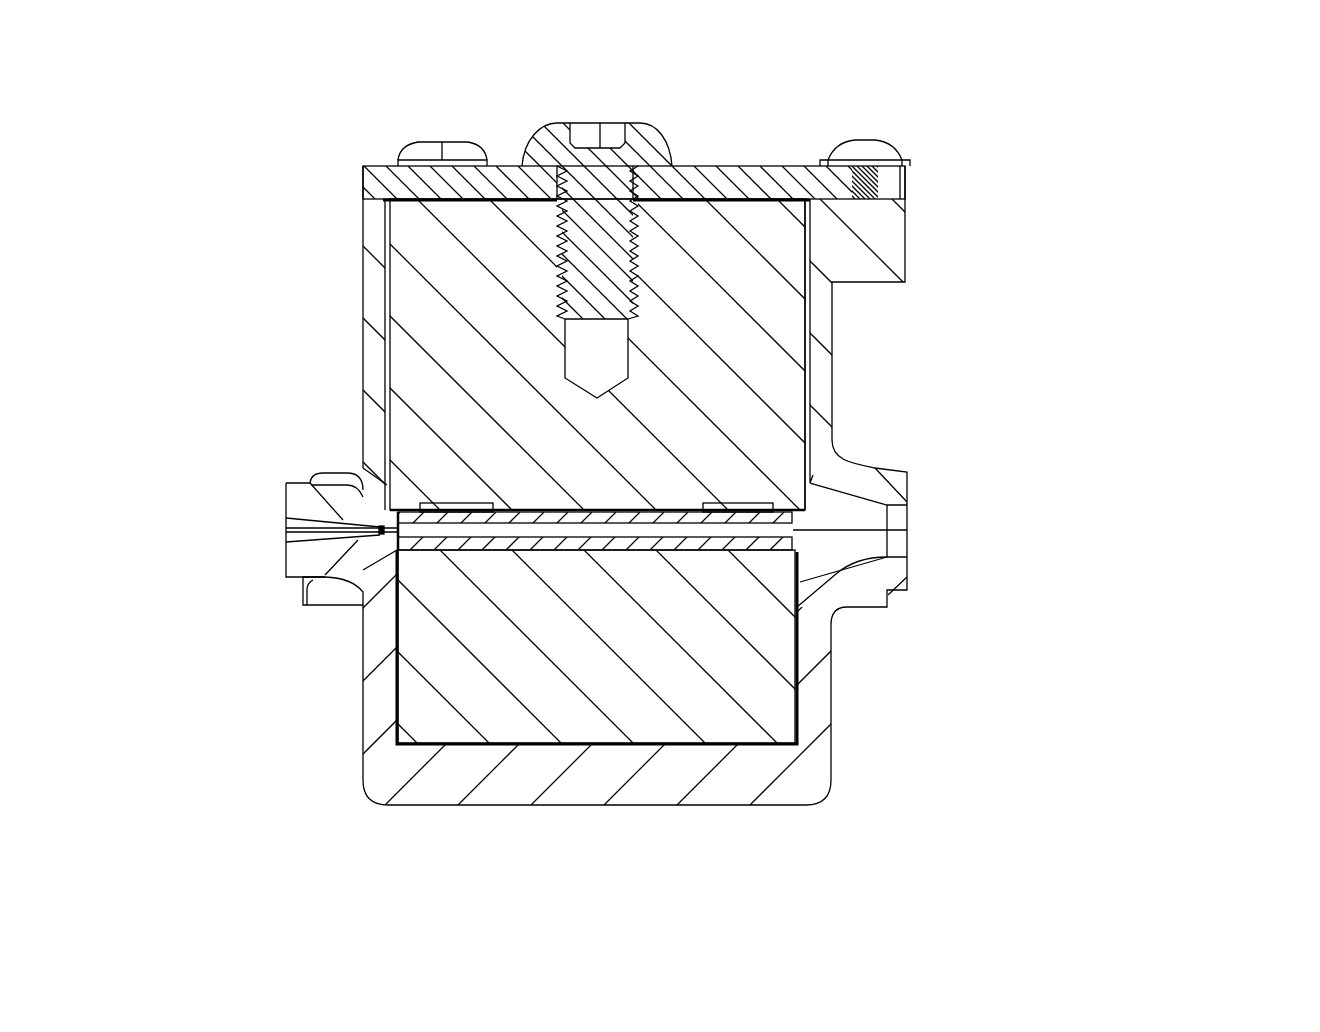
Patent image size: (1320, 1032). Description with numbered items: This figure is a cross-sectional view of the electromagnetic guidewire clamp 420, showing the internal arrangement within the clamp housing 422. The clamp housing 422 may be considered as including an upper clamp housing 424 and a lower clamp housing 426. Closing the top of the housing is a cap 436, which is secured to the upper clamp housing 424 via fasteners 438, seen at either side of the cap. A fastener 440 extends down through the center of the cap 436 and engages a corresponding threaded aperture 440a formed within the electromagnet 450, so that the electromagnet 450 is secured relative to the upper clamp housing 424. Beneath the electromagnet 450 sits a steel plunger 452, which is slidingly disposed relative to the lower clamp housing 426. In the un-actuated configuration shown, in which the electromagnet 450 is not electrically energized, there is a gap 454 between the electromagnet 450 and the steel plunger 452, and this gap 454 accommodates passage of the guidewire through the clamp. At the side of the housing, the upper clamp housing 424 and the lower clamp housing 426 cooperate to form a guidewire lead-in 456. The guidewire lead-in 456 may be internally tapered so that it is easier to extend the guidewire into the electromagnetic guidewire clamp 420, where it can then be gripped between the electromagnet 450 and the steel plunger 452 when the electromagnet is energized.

The electromagnetic guidewire clamp 420 is at (1118, 80).
The clamp housing 422 is at (268, 285).
The upper clamp housing 424 is at (832, 358).
The lower clamp housing 426 is at (831, 702).
The cap 436 is at (705, 168).
The fasteners 438 is at (428, 148).
The fastener 440 is at (561, 110).
The threaded aperture 440a is at (630, 347).
The electromagnet 450 is at (724, 444).
The steel plunger 452 is at (662, 652).
The gap 454 is at (596, 512).
The guidewire lead-in 456 is at (275, 522).